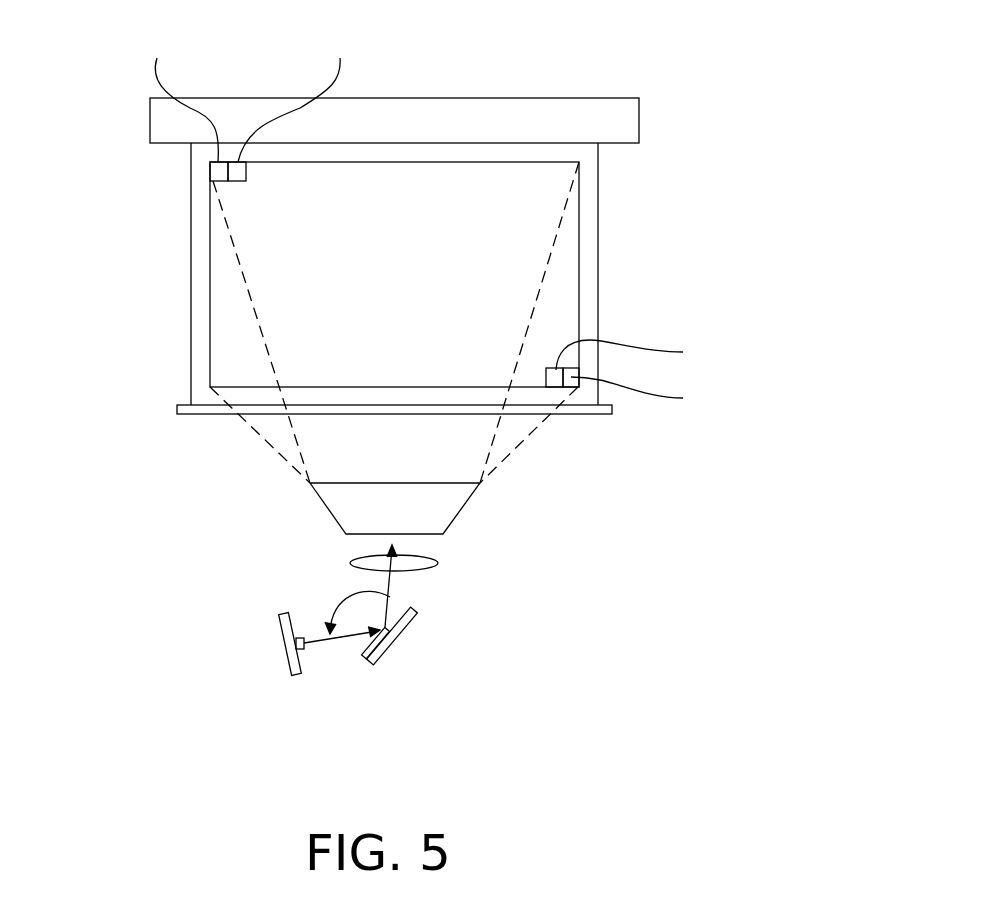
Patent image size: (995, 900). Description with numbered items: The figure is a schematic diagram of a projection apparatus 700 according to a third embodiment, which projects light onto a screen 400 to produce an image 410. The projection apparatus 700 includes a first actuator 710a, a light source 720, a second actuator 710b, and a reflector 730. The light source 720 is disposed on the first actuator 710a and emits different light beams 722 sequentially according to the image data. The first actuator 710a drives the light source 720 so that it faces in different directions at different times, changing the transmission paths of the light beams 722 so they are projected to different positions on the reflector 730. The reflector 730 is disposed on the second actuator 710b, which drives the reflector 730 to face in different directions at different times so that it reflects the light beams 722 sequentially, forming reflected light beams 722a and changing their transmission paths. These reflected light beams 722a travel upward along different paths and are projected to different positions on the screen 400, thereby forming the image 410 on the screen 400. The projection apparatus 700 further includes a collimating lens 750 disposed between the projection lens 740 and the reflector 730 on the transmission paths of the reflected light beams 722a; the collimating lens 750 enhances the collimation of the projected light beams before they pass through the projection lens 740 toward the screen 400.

The screen 400 is at (599, 226).
The image 410 is at (585, 320).
The projection apparatus 700 is at (188, 502).
The projection lens 740 is at (331, 514).
The collimating lens 750 is at (351, 562).
The light source 720 is at (297, 638).
The first actuator 710a is at (283, 657).
The second actuator 710b is at (369, 665).
The reflector 730 is at (366, 656).
The light beams 722 is at (392, 596).
The reflected light beams 722a is at (400, 580).